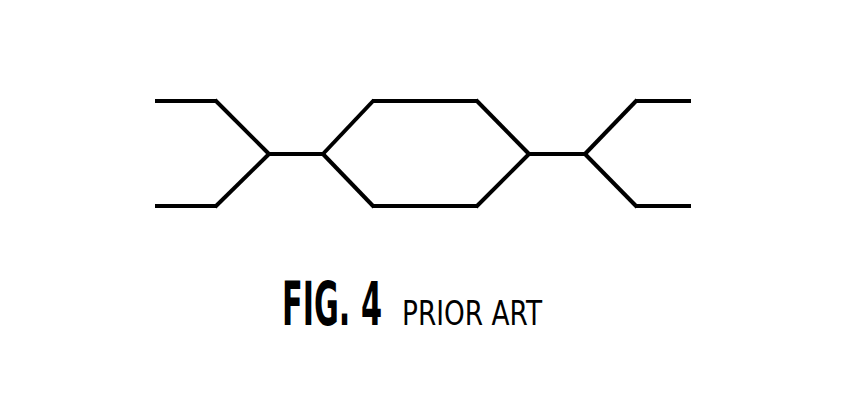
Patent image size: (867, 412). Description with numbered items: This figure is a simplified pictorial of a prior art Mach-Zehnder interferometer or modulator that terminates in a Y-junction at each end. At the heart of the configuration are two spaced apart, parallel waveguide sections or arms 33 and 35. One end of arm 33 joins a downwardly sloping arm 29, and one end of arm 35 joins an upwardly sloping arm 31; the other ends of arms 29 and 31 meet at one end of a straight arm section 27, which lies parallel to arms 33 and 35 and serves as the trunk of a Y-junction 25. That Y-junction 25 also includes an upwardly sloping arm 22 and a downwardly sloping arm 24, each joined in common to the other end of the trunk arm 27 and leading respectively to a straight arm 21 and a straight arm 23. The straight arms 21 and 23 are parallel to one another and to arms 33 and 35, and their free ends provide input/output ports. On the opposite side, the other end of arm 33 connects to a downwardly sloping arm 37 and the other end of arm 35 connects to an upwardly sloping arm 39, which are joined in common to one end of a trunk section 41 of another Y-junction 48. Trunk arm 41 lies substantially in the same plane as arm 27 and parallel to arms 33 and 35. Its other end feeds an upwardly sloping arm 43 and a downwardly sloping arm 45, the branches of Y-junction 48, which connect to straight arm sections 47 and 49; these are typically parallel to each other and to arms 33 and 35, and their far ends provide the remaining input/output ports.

The straight arm 21 is at (192, 100).
The upwardly sloping arm 22 is at (235, 112).
The straight arm 23 is at (175, 208).
The downwardly sloping arm 24 is at (236, 186).
The Y-junction 25 is at (173, 167).
The straight arm section 27 is at (288, 158).
The downwardly sloping arm 29 is at (350, 123).
The upwardly sloping arm 31 is at (350, 181).
The waveguide section or arm 33 is at (415, 100).
The waveguide section or arm 35 is at (425, 205).
The downwardly sloping arm 37 is at (493, 115).
The upwardly sloping arm 39 is at (507, 177).
The trunk section 41 is at (563, 151).
The upwardly sloping arm 43 is at (613, 115).
The downwardly sloping arm 45 is at (608, 182).
The straight arm section 47 is at (672, 100).
The Y-junction 48 is at (679, 151).
The straight arm section 49 is at (678, 208).